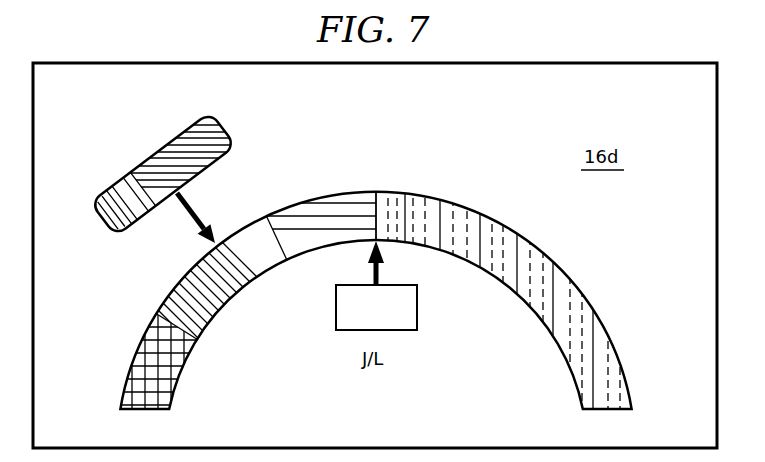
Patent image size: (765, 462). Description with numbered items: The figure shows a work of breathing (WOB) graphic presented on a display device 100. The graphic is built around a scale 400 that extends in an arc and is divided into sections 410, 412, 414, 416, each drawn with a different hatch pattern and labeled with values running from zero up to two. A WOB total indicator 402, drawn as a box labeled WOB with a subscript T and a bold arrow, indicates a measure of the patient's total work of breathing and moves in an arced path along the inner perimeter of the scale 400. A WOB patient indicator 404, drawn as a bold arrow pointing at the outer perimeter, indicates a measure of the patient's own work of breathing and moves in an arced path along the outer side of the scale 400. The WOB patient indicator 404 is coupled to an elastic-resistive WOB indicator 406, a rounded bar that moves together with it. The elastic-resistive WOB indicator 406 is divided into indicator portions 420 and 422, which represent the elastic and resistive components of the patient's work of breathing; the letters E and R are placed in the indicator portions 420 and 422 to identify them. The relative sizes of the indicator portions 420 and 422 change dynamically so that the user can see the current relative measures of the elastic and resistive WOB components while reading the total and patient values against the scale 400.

The display device 100 is at (547, 56).
The scale 400 is at (469, 177).
The WOB total indicator 402 is at (417, 305).
The WOB patient indicator 404 is at (180, 207).
The elastic-resistive WOB indicator 406 is at (176, 150).
The scale section 410 is at (137, 358).
The scale section 412 is at (222, 293).
The scale section 414 is at (352, 200).
The scale section 416 is at (573, 283).
The indicator portion 420 is at (113, 183).
The indicator portion 422 is at (190, 132).